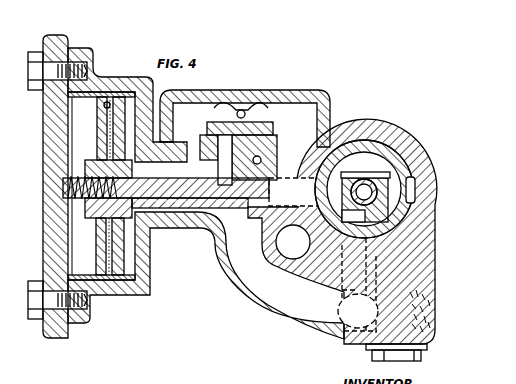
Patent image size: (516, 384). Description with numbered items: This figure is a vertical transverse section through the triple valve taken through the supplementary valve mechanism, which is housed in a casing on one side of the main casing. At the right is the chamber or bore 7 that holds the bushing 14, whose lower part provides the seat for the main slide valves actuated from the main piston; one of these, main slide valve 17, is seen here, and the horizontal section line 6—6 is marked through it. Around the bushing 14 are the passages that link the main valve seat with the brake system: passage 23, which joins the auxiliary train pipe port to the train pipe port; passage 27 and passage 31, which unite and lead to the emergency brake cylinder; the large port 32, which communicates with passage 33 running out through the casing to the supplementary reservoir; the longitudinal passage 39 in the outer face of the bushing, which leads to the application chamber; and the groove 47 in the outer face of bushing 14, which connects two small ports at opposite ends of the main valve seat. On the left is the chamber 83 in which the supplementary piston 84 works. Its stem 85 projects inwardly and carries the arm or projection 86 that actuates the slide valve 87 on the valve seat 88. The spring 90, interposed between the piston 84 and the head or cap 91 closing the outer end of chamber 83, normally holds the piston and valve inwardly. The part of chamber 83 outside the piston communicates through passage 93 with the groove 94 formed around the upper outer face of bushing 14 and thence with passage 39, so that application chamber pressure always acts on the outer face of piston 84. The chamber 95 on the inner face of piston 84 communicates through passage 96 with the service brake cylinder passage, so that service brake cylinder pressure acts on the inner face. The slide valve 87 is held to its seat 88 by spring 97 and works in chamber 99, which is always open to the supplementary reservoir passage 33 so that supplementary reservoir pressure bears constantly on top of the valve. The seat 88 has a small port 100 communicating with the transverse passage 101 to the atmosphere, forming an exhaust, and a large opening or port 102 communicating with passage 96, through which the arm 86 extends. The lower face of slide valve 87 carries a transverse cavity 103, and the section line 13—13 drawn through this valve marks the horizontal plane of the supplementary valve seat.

The ball 6 is at (364, 192).
The chamber or bore 7 is at (365, 190).
The port 13 is at (183, 140).
The bushing 14 is at (370, 240).
The main slide valve 17 is at (405, 190).
The passage 23 is at (293, 242).
The passage 27 is at (400, 305).
The passage 31 is at (364, 283).
The large port 32 is at (372, 240).
The passage 33 is at (318, 187).
The longitudinal passage 39 is at (388, 193).
The groove 47 is at (404, 189).
The chamber 83 is at (101, 183).
The piston 84 is at (121, 254).
The stem 85 is at (166, 189).
The arm or projection 86 is at (222, 165).
The slide valve 87 is at (287, 102).
The valve seat 88 is at (305, 114).
The spring 90 is at (72, 203).
The head or cap 91 is at (52, 130).
The passage 93 is at (76, 170).
The groove 94 is at (410, 135).
The chamber 95 is at (172, 213).
The passage 96 is at (294, 295).
The spring 97 is at (222, 107).
The chamber 99 is at (184, 116).
The small port 100 is at (262, 126).
The transverse passage 101 is at (262, 160).
The large opening or port 102 is at (204, 124).
The cavity 103 is at (289, 126).